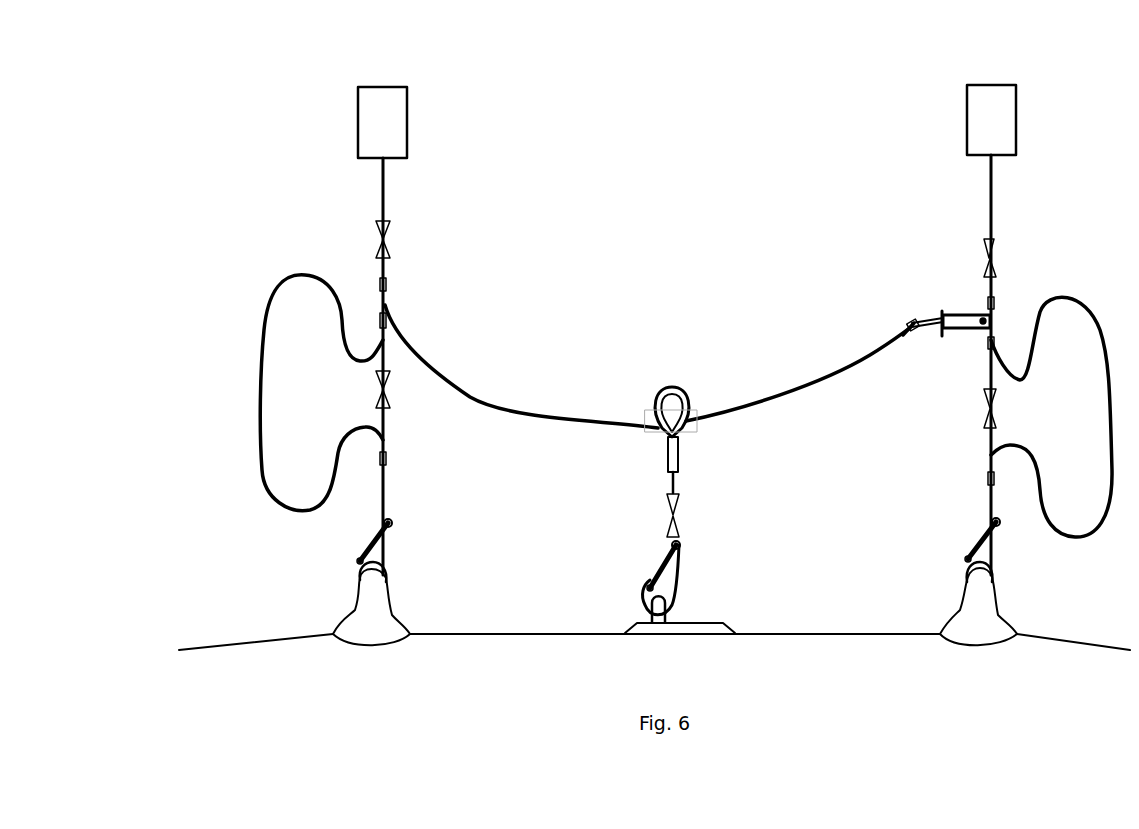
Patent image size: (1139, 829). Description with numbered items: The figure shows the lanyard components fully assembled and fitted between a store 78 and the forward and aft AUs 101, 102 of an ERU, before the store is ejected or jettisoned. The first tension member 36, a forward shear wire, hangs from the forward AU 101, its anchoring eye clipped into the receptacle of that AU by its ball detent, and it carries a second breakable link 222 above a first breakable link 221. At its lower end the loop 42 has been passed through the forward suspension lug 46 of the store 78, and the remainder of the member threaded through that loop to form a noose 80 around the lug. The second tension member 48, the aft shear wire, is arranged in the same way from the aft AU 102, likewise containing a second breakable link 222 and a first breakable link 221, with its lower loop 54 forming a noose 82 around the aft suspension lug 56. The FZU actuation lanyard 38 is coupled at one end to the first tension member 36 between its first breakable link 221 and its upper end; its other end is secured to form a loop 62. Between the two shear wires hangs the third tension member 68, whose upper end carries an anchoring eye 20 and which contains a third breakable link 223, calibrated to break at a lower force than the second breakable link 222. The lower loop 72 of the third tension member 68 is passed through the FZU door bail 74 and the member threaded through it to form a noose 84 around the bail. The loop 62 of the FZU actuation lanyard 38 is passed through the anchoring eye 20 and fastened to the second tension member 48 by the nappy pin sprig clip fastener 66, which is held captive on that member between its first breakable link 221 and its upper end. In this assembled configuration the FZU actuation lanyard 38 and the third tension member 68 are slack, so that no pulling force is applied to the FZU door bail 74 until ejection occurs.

The anchoring eye 20 is at (683, 393).
The first tension member 36 is at (386, 464).
The FZU actuation lanyard 38 is at (800, 392).
The loop 42 is at (392, 524).
The forward suspension lug 46 is at (362, 620).
The second tension member 48 is at (989, 448).
The loop 54 is at (978, 540).
The aft suspension lug 56 is at (998, 625).
The loop 62 is at (932, 336).
The nappy pin sprig clip fastener 66 is at (955, 311).
The third tension member 68 is at (676, 485).
The loop 72 is at (662, 553).
The FZU door bail 74 is at (668, 618).
The store 78 is at (545, 652).
The noose 80 is at (356, 566).
The noose 82 is at (964, 568).
The noose 84 is at (640, 596).
The forward AU 101 is at (407, 95).
The aft AU 102 is at (1016, 113).
The first breakable link 221 is at (380, 397).
The second breakable link 222 is at (390, 228).
The third breakable link 223 is at (670, 520).